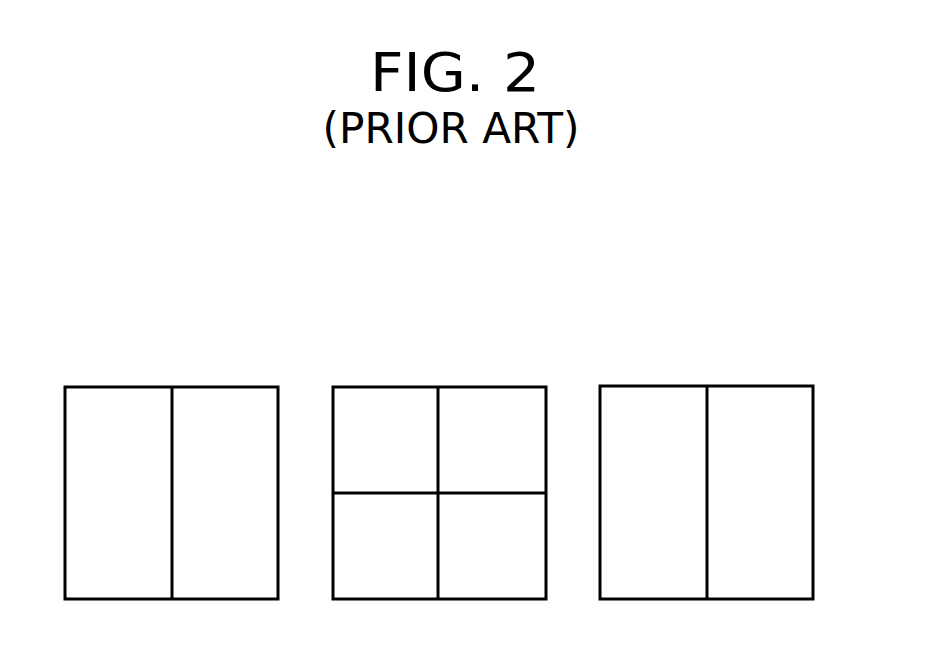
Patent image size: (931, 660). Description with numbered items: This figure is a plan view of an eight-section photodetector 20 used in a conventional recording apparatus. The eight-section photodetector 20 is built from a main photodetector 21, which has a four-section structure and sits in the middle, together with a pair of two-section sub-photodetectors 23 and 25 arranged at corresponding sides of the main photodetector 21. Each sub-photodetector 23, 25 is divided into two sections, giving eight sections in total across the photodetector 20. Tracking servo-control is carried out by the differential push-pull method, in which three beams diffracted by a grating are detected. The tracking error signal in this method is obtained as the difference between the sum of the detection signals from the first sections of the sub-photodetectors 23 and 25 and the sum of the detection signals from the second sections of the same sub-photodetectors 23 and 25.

The eight-section photodetector 20 is at (305, 258).
The main photodetector 21 is at (458, 387).
The sub-photodetector 23 is at (162, 387).
The sub-photodetector 25 is at (755, 386).